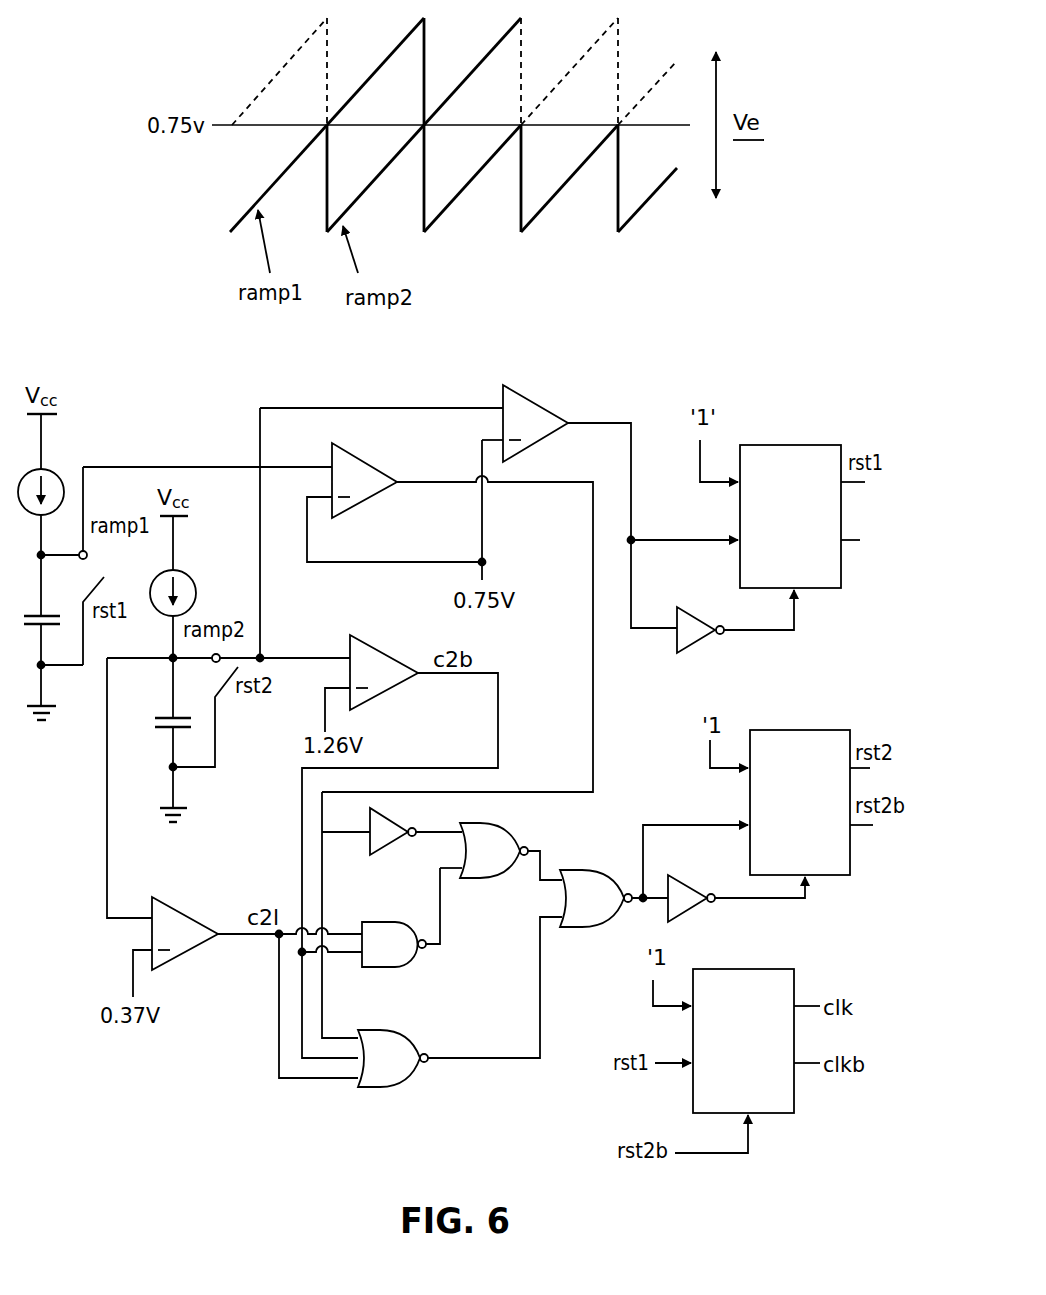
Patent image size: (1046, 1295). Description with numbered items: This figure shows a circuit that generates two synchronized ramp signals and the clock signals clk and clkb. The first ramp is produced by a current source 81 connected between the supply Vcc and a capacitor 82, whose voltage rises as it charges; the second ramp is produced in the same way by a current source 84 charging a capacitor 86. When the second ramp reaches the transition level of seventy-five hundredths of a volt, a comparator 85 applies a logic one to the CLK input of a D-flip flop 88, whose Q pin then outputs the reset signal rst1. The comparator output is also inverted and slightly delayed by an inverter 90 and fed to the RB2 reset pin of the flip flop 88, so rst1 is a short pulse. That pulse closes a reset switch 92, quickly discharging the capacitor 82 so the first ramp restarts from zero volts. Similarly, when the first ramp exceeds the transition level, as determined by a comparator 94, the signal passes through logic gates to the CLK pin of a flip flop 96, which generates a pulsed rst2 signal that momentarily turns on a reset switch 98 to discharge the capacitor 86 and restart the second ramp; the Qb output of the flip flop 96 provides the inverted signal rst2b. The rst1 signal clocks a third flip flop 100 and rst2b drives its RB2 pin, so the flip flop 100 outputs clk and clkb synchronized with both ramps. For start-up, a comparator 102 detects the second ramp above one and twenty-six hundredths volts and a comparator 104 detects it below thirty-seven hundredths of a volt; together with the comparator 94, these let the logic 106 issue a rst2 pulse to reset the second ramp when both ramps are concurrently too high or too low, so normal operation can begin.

The first current source 81 is at (28, 470).
The capacitor 82 is at (28, 613).
The current source 84 is at (186, 573).
The comparator 85 is at (550, 409).
The capacitor 86 is at (166, 714).
The D-flip flop 88 is at (810, 445).
The inverter 90 is at (704, 638).
The reset switch 92 is at (106, 588).
The comparator 94 is at (372, 462).
The flip flop 96 is at (820, 730).
The reset switch 98 is at (230, 698).
The third flip flop 100 is at (762, 969).
The comparator 102 is at (374, 646).
The comparator 104 is at (185, 912).
The logic 106 is at (274, 1093).